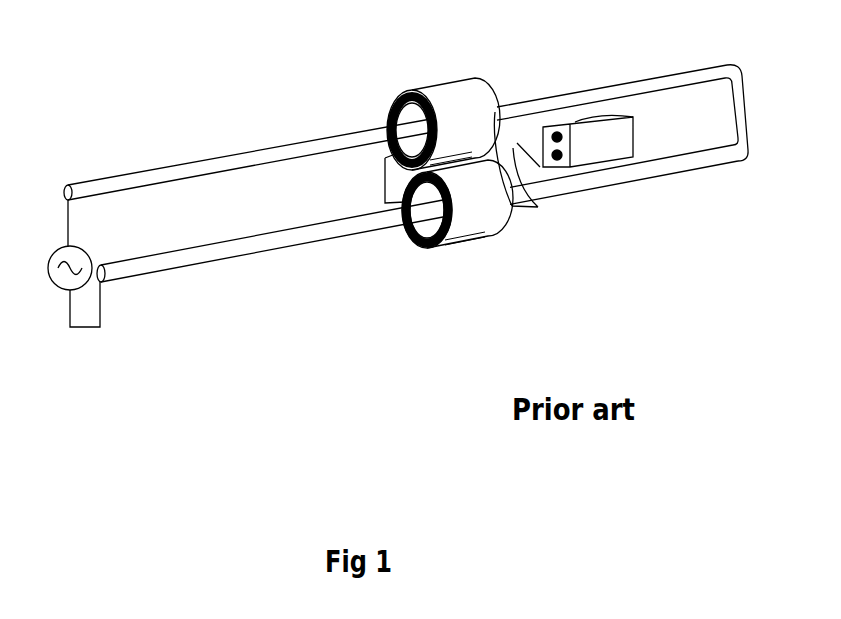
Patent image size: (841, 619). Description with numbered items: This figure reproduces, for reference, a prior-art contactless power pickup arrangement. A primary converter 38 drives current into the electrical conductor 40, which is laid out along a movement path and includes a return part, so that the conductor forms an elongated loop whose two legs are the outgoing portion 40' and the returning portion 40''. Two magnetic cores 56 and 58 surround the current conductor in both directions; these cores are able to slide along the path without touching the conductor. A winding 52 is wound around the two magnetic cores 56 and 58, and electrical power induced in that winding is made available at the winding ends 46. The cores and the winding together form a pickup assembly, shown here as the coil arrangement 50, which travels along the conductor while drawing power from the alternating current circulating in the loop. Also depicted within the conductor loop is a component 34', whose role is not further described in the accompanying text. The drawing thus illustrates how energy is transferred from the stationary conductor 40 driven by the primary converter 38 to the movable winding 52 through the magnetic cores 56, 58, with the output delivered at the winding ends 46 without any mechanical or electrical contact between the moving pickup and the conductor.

The connector block 34' is at (618, 138).
The primary converter 38 is at (50, 257).
The electrical conductor 40 is at (705, 86).
The upper conductor leg 40' is at (395, 132).
The lower conductor leg 40'' is at (417, 220).
The winding ends 46 is at (385, 177).
The upper coil 50 is at (403, 62).
The winding 52 is at (500, 222).
The magnetic core 56 is at (384, 93).
The magnetic core 58 is at (440, 258).